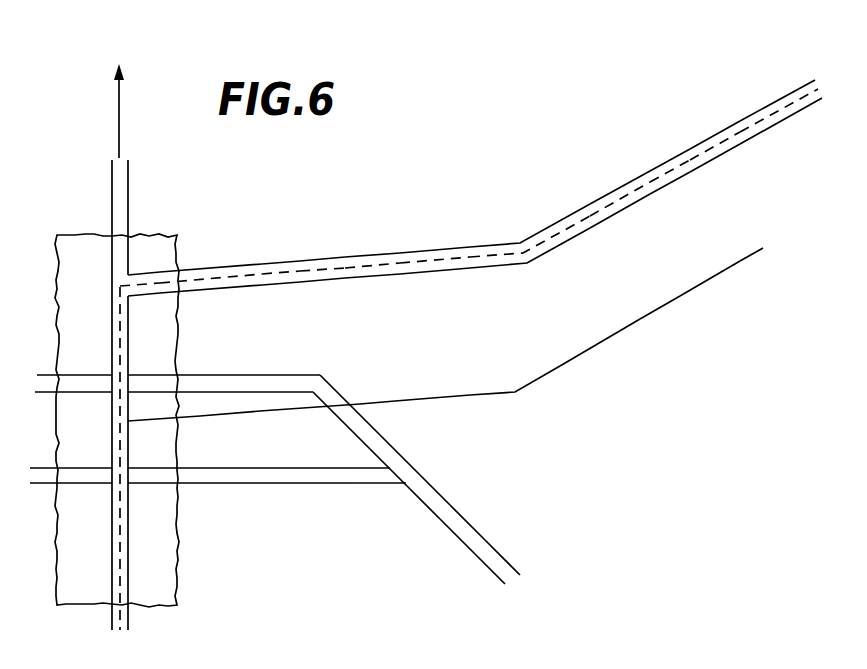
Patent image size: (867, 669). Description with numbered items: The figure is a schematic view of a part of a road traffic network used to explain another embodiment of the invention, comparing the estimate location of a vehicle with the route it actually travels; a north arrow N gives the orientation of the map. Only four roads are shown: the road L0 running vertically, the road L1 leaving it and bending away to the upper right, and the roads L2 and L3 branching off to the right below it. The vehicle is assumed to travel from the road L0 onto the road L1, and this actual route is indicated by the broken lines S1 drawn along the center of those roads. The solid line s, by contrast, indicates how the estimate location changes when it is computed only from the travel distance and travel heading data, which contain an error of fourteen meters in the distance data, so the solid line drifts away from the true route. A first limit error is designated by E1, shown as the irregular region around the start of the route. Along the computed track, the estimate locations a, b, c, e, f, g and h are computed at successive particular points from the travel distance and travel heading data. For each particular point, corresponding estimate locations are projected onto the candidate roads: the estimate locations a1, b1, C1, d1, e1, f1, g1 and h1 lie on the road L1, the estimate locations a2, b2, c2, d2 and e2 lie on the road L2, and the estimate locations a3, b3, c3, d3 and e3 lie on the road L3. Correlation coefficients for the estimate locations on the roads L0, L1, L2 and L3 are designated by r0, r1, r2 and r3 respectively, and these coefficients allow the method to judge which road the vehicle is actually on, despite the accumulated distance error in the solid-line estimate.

The north direction indicator N is at (119, 95).
The first limit error E1 is at (162, 235).
The road L0 is at (155, 403).
The correlation coefficient r0 is at (155, 403).
The estimate location to road L1 a1 is at (112, 288).
The estimate location to road L2 a2 is at (108, 383).
The estimate location a is at (110, 422).
The estimate location to road L3 a3 is at (110, 484).
The estimate location to road L1 b1 is at (226, 280).
The road L1 is at (281, 257).
The estimate location to road L1 C1 is at (317, 272).
The correlation coefficient r1 is at (389, 258).
The estimate location to road L1 d1 is at (417, 262).
The estimate location to road L1 e1 is at (513, 263).
The estimate location to road L1 f1 is at (600, 211).
The broken lines S1 is at (654, 188).
The estimate location to road L1 g1 is at (686, 164).
The estimate location to road L1 h1 is at (773, 134).
The estimate location to road L2 b2 is at (217, 353).
The road L2 is at (285, 368).
The estimate location to road L2 c2 is at (328, 386).
The estimate location to road L2 d2 is at (411, 398).
The estimate location to road L3 d3 is at (422, 469).
The estimate location to road L2 e2 is at (470, 508).
The estimate location to road L3 e3 is at (501, 540).
The estimate location b is at (227, 414).
The estimate location c is at (325, 436).
The correlation coefficient r2 is at (386, 420).
The estimate location e is at (515, 390).
The estimate location f is at (607, 338).
The estimate location g is at (663, 285).
The estimate location h is at (728, 256).
The solid line s is at (751, 257).
The estimate location to road L3 b3 is at (219, 477).
The road L3 is at (275, 459).
The estimate location to road L3 c3 is at (304, 481).
The correlation coefficient r3 is at (378, 508).